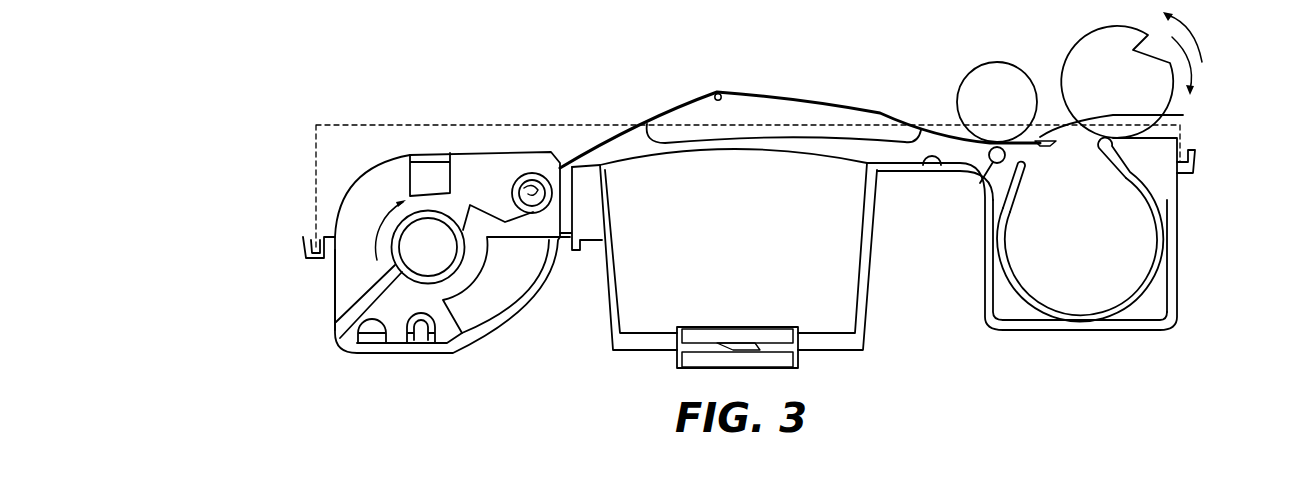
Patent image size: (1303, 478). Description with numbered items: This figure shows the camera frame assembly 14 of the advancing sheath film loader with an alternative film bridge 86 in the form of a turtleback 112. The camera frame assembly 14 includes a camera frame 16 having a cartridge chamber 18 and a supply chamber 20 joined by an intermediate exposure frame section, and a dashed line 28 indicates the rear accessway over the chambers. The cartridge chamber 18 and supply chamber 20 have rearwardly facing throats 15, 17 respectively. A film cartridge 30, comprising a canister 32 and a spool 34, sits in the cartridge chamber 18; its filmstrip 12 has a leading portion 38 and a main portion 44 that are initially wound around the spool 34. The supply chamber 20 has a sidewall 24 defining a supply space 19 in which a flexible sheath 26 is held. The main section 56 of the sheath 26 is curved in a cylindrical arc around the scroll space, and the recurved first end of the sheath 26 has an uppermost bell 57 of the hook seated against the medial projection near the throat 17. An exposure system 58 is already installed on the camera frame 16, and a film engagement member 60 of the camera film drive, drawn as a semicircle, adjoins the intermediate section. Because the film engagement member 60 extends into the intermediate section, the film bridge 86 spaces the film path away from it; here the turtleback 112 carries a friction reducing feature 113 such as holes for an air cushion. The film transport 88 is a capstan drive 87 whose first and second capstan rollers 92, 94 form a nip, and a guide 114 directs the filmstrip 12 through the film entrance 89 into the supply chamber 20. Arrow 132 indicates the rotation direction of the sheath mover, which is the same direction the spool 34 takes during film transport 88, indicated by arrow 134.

The filmstrip 12 is at (459, 223).
The camera frame assembly 14 is at (766, 267).
The throat of cartridge chamber 15 is at (427, 152).
The camera frame 16 is at (863, 350).
The throat of supply chamber 17 is at (1048, 112).
The cartridge chamber 18 is at (337, 283).
The supply space 19 is at (1142, 307).
The supply chamber 20 is at (1123, 310).
The sidewall of supply chamber 24 is at (1012, 297).
The flexible sheath 26 is at (1075, 313).
The rear accessway 28 is at (316, 143).
The film cartridge 30 is at (475, 137).
The canister 32 is at (485, 150).
The spool 34 is at (340, 320).
The leading portion 38 is at (940, 125).
The main portion 44 is at (615, 145).
The main section of sheath 56 is at (1042, 295).
The bell of hook 57 is at (1030, 160).
The exposure system 58 is at (681, 361).
The film engagement member 60 is at (926, 156).
The film bridge 86 is at (800, 90).
The capstan drive 87 is at (930, 86).
The film transport 88 is at (930, 86).
The film entrance 89 is at (1061, 146).
The first capstan roller 92 is at (970, 72).
The second capstan roller 94 is at (980, 183).
The turtleback 112 is at (803, 98).
The friction reducing feature 113 is at (721, 94).
The guide 114 is at (1139, 120).
The arrow 132 is at (1190, 77).
The arrow 134 is at (381, 223).